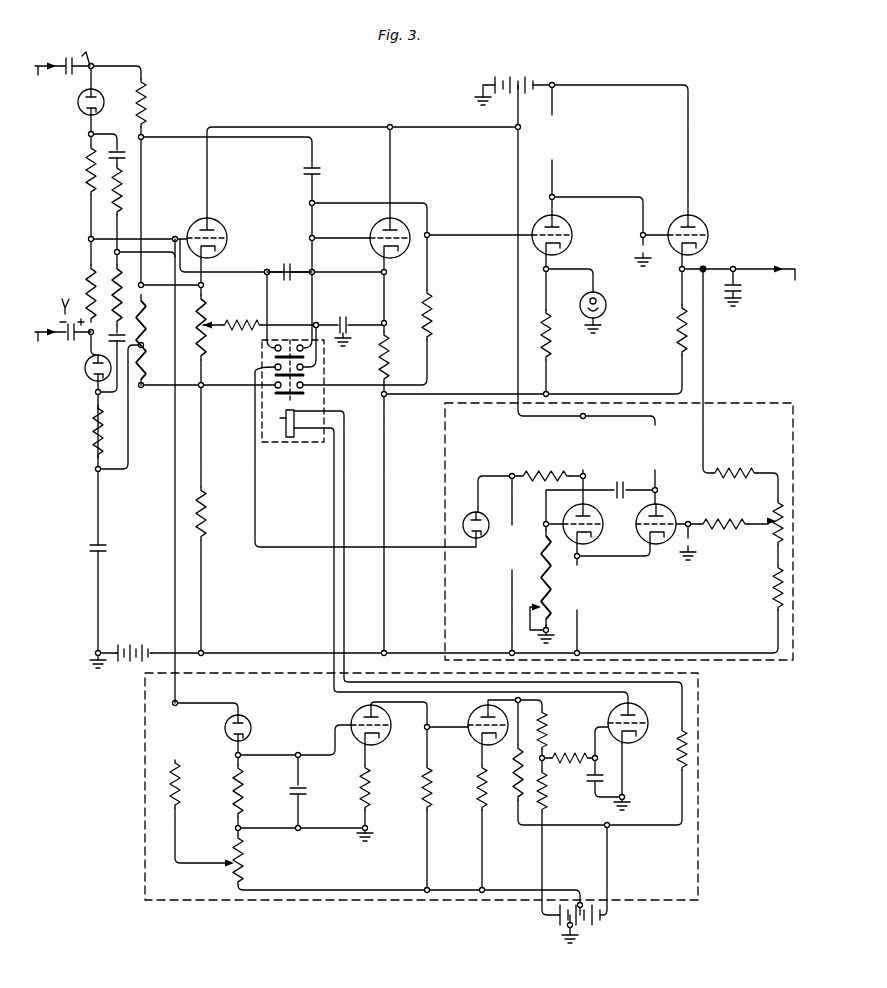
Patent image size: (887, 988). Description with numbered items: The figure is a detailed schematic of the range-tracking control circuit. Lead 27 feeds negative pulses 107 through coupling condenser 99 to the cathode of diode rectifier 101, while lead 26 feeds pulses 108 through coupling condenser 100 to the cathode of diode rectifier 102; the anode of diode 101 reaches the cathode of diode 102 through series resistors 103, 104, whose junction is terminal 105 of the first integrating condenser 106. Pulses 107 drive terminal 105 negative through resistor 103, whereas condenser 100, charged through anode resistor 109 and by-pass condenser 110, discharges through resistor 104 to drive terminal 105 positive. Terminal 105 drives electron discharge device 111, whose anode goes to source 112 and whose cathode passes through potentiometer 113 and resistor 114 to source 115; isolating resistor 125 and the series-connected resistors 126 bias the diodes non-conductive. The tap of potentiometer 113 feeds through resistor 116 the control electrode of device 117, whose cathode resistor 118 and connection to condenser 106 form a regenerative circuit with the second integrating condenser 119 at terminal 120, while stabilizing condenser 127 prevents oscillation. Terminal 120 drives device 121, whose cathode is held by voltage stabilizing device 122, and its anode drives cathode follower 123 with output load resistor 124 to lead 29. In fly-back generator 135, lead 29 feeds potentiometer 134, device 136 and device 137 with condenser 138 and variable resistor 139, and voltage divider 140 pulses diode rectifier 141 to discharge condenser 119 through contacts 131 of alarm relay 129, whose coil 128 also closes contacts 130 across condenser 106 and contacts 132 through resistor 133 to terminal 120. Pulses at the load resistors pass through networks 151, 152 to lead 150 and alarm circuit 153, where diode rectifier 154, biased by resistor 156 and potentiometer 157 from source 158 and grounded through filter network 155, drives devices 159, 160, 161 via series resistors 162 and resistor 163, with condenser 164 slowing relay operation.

The lead 27 is at (46, 76).
The coupling condenser 99 is at (66, 60).
The pulse 107 is at (102, 55).
The diode rectifier 101 is at (77, 104).
The isolating resistor 125 is at (146, 104).
The series resistor 103 is at (85, 167).
The coupling condenser-coupling resistor series network 151 is at (124, 210).
The series resistor 104 is at (88, 270).
The coupling network 152 is at (124, 282).
The pulse 108 is at (65, 299).
The lead 26 is at (49, 324).
The coupling condenser 100 is at (70, 342).
The diode rectifier 102 is at (85, 370).
The series-connected resistors 126 is at (144, 338).
The anode resistor 109 is at (91, 434).
The lead 150 is at (175, 428).
The by-pass condenser 110 is at (89, 549).
The source of potential 115 is at (132, 646).
The resistor 114 is at (206, 497).
The potentiometer 113 is at (206, 343).
The resistor 116 is at (243, 321).
The electron discharge device 111 is at (213, 221).
The terminal 105 is at (267, 272).
The first integrating condenser 106 is at (287, 263).
The stabilizing condenser 127 is at (322, 171).
The electron discharge device 117 is at (370, 224).
The terminal 120 is at (318, 322).
The second integrating condenser 119 is at (345, 313).
The alarm relay 129 is at (278, 442).
The contacts 130 is at (320, 352).
The contacts 131 is at (320, 370).
The contacts 132 is at (320, 388).
The actuating coil 128 is at (285, 419).
The resistor 133 is at (432, 314).
The cathode resistor 118 is at (388, 356).
The source of B supply potential 112 is at (513, 79).
The electron discharge device 121 is at (570, 223).
The electron discharge device 123 is at (706, 220).
The voltage stabilizing device 122 is at (606, 298).
The output load resistor 124 is at (672, 337).
The lead 29 is at (765, 284).
The fly-back generator 135 is at (768, 403).
The diode rectifier 141 is at (465, 514).
The voltage divider 140 is at (535, 484).
The condenser 138 is at (620, 480).
The electron discharge device 137 is at (600, 510).
The electron discharge device 136 is at (680, 504).
The variable resistor 139 is at (540, 602).
The potentiometer 134 is at (771, 528).
The alarm circuit 153 is at (145, 768).
The diode rectifier 154 is at (247, 716).
The resistor 156 is at (182, 771).
The filter network 155 is at (275, 826).
The potentiometer 157 is at (249, 875).
The electron discharge device 159 is at (351, 718).
The electron discharge device 160 is at (470, 718).
The electron discharge device 161 is at (608, 717).
The series resistors 162 is at (552, 722).
The condenser 164 is at (586, 777).
The resistor 163 is at (552, 800).
The B supply source 158 is at (597, 925).